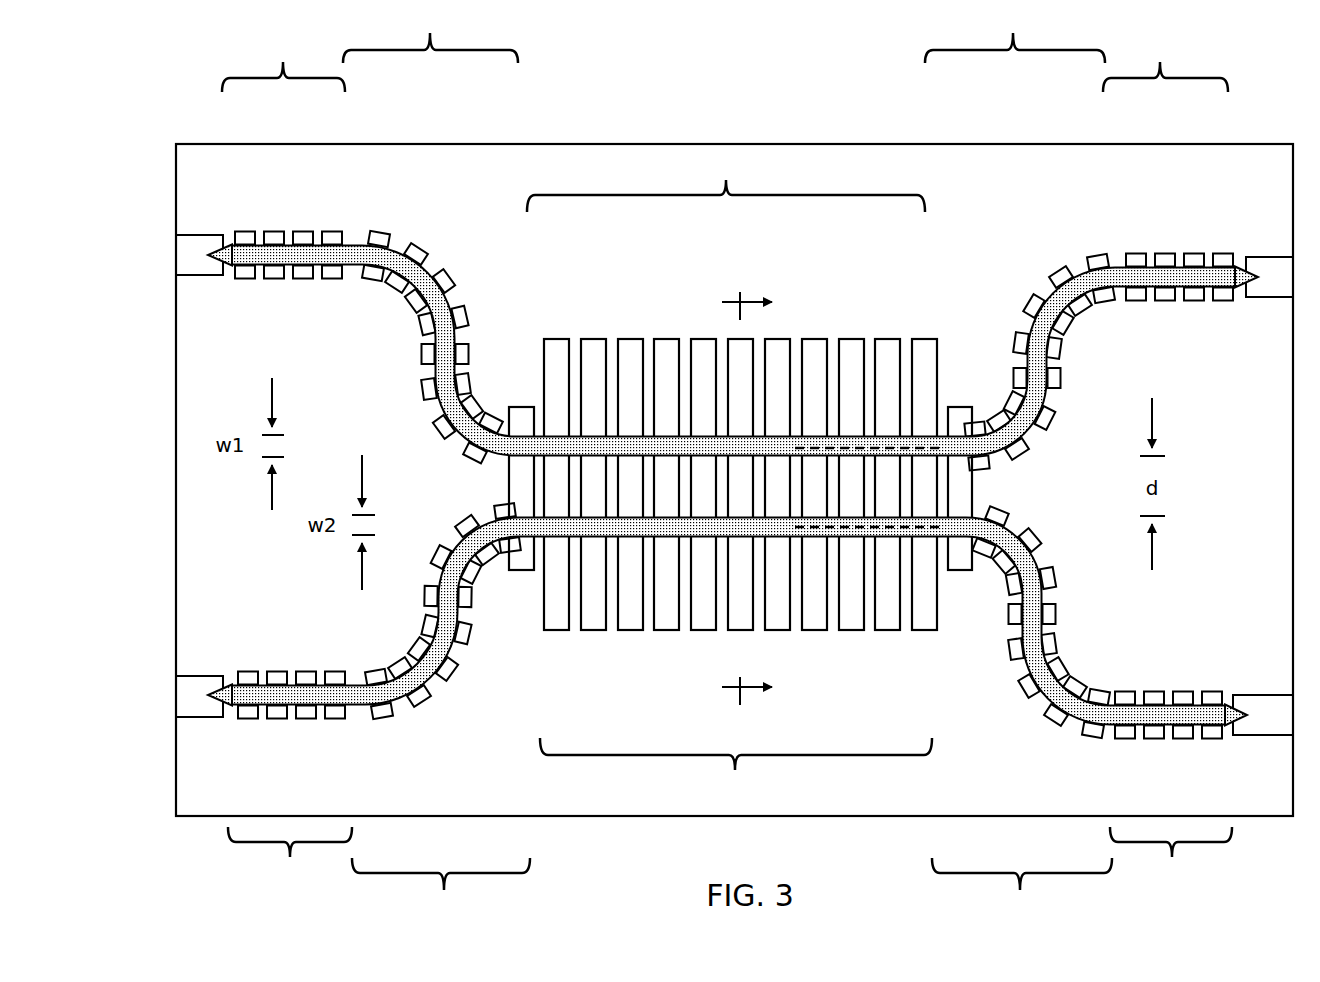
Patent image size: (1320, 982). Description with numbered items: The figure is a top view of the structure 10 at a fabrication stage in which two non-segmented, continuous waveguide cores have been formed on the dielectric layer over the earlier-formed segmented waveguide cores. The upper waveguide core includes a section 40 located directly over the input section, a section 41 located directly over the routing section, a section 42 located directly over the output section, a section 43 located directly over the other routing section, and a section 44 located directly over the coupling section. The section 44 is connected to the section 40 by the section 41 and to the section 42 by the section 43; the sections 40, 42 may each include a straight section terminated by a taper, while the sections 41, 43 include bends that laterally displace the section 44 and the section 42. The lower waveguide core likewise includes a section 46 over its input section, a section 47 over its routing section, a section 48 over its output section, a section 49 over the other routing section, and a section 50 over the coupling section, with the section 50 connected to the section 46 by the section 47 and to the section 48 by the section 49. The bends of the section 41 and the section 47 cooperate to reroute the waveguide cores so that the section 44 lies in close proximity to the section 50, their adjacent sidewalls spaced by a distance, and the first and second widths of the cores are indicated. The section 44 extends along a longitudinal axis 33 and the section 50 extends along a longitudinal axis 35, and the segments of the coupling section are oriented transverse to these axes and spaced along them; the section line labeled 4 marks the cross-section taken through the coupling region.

The structure 10 is at (276, 202).
The longitudinal axis 33 is at (886, 448).
The longitudinal axis 35 is at (918, 527).
The section line of FIG. 4 is at (763, 498).
The section 40 is at (283, 63).
The section 41 is at (430, 33).
The section 42 is at (1165, 61).
The section 43 is at (1015, 33).
The section 44 is at (726, 182).
The section 46 is at (290, 857).
The section 47 is at (441, 889).
The section 48 is at (1171, 856).
The section 49 is at (1022, 888).
The section 50 is at (736, 770).